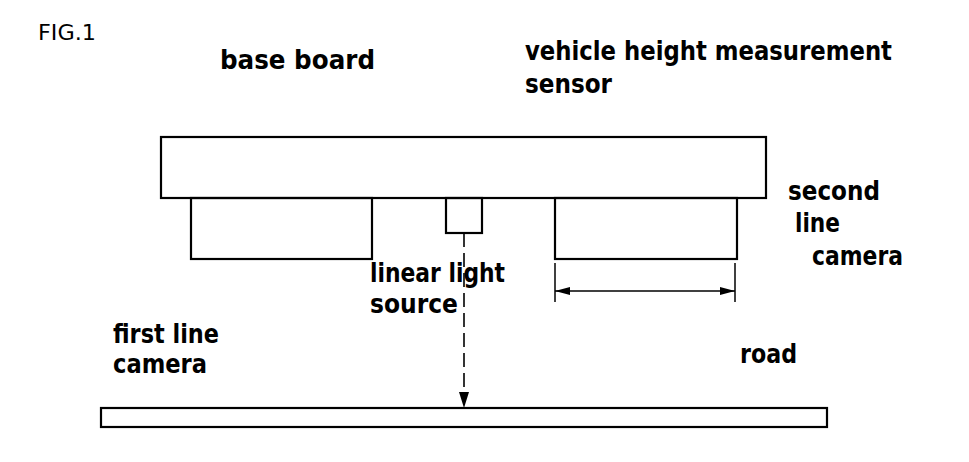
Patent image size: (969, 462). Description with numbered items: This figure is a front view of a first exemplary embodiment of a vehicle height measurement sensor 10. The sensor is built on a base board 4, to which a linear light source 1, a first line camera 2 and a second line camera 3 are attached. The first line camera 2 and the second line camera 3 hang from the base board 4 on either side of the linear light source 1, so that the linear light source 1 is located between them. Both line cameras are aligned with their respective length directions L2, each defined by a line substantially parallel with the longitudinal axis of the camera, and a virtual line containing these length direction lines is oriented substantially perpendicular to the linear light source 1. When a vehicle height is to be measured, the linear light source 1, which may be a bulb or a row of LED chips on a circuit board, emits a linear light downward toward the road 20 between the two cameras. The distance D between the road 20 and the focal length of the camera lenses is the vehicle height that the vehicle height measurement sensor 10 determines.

The vehicle height measurement sensor 10 is at (739, 116).
The base board 4 is at (256, 147).
The first line camera 2 is at (252, 250).
The second line camera 3 is at (725, 238).
The linear light source 1 is at (470, 222).
The road 20 is at (780, 415).
The distance D is at (464, 315).
The length direction L2 is at (638, 292).